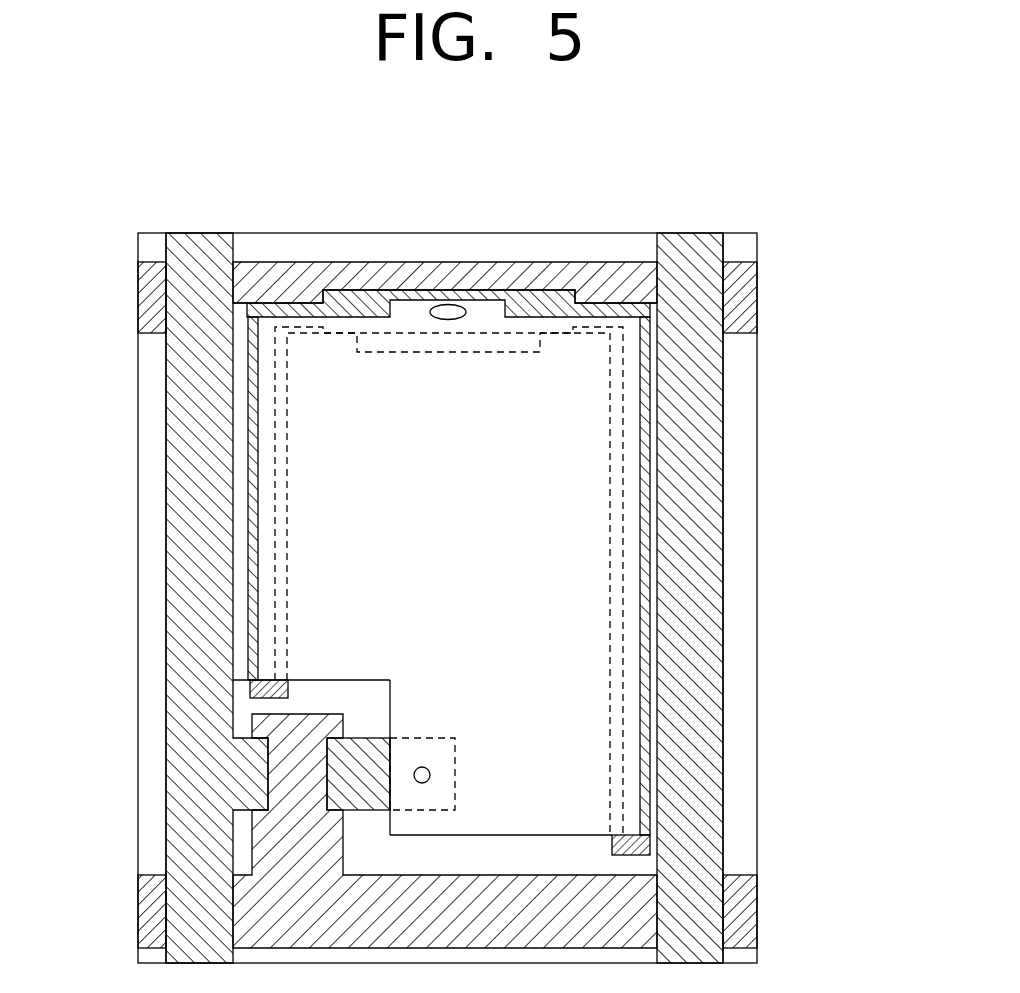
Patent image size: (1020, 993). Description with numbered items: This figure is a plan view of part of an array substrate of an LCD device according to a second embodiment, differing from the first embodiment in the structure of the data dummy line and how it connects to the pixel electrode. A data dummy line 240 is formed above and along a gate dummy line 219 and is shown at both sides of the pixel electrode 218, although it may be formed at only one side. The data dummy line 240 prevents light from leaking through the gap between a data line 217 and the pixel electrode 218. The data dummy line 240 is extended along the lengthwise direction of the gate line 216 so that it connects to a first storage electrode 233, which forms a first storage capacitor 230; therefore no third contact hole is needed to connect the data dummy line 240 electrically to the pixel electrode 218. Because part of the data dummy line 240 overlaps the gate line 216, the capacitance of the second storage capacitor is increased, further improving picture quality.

The gate line 216 is at (737, 907).
The data line 217 is at (690, 678).
The pixel electrode 218 is at (587, 577).
The gate dummy line 219 is at (258, 688).
The first storage capacitor 230 is at (530, 283).
The first storage electrode 233 is at (557, 302).
The data dummy line 240 is at (253, 435).